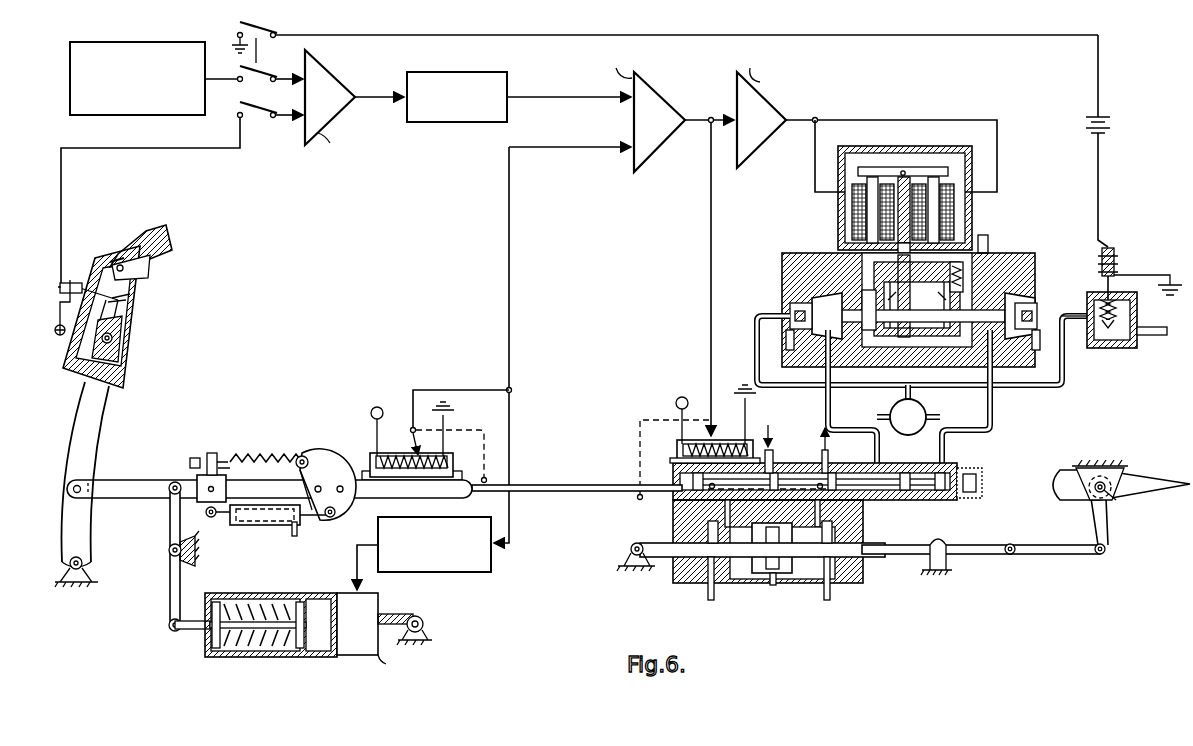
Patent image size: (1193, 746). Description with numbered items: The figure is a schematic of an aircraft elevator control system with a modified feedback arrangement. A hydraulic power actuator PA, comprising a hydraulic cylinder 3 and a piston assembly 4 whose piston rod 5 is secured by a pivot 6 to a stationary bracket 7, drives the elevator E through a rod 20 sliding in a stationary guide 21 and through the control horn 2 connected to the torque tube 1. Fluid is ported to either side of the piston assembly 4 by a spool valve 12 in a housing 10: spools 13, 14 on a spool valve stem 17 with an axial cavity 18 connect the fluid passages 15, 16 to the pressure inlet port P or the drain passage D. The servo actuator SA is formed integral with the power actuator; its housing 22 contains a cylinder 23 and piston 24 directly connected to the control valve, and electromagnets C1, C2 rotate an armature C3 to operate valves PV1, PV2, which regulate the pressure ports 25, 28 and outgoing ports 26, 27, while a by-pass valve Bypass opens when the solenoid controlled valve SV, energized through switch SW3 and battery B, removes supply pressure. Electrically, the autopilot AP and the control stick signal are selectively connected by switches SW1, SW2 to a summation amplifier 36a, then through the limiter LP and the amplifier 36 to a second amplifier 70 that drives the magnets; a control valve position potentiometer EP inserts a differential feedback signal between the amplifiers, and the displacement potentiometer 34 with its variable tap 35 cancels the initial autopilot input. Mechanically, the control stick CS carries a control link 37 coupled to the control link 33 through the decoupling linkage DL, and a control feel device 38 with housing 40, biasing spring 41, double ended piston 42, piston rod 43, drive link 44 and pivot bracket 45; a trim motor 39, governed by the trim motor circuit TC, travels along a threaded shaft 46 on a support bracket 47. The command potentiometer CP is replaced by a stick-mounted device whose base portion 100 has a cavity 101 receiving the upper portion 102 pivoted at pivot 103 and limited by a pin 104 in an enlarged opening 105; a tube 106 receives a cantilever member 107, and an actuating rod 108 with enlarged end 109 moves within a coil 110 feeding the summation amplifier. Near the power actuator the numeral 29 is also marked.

The torque tube 1 is at (1108, 497).
The control horn 2 is at (1092, 517).
The hydraulic cylinder 3 is at (744, 582).
The piston assembly 4 is at (773, 583).
The piston rod 5 is at (660, 556).
The pivot 6 is at (645, 544).
The stationary bracket 7 is at (627, 551).
The control valve housing 10 is at (860, 458).
The spool valve 12 is at (845, 509).
The spool 13 is at (673, 480).
The spool 14 is at (846, 470).
The fluid passage 15 is at (726, 532).
The fluid passage 16 is at (812, 560).
The spool valve stem 17 is at (778, 470).
The axial cavity 18 is at (782, 540).
The rod 20 is at (960, 548).
The stationary guide 21 is at (946, 565).
The servo actuator housing 22 is at (948, 470).
The cylinder 23 is at (895, 474).
The piston 24 is at (908, 500).
The pressure port 25 is at (810, 325).
The outgoing pressure port 26 is at (850, 293).
The outgoing port 27 is at (968, 283).
The pressure port 28 is at (1018, 327).
The spool section 29 is at (882, 503).
The control link 33 is at (552, 486).
The control valve displacement responsive potentiometer 34 is at (396, 452).
The variable tap 35 is at (413, 438).
The mixer and amplifier 36 is at (660, 148).
The summation amplifier 36a is at (330, 70).
The control link 37 is at (156, 481).
The control feel device 38 is at (260, 615).
The trim motor 39 is at (362, 656).
The housing 40 is at (262, 600).
The biasing spring 41 is at (232, 600).
The double ended piston 42 is at (212, 618).
The piston rod 43 is at (192, 630).
The drive link 44 is at (168, 520).
The pivot bracket 45 is at (190, 562).
The threaded shaft 46 is at (396, 613).
The support bracket 47 is at (424, 624).
The second amplifier 70 is at (766, 146).
The enlarged base portion 100 is at (118, 362).
The central cavity 101 is at (122, 345).
The upper portion 102 is at (165, 246).
The pivot 103 is at (148, 270).
The pin 104 is at (115, 335).
The enlarged opening 105 is at (122, 322).
The tube 106 is at (122, 376).
The cantilever member 107 is at (122, 298).
The actuating rod 108 is at (112, 258).
The enlarged end 109 is at (110, 262).
The coil 110 is at (80, 282).
The autopilot system AP is at (136, 118).
The switch SW1 is at (262, 114).
The switch SW2 is at (262, 78).
The switch SW3 is at (665, 42).
The autopilot signal limiter LP is at (507, 108).
The source battery B is at (1108, 130).
The servo actuator SA is at (902, 247).
The electromagnet C1 is at (852, 210).
The electromagnet C2 is at (958, 210).
The armature C3 is at (912, 167).
The valve PV1 is at (790, 300).
The valve PV2 is at (1020, 300).
The solenoid controlled valve SV is at (1100, 348).
The by-pass valve Bypass is at (922, 389).
The hydraulic power actuator PA is at (804, 515).
The pressure inlet port P is at (776, 435).
The drain passage D is at (834, 436).
The elevator E is at (1138, 476).
The control valve position variable potentiometer EP is at (677, 446).
The control stick CS is at (90, 436).
The command potentiometer CP is at (130, 305).
The decoupling linkage assembly DL is at (322, 455).
The trim motor circuit TC is at (463, 574).